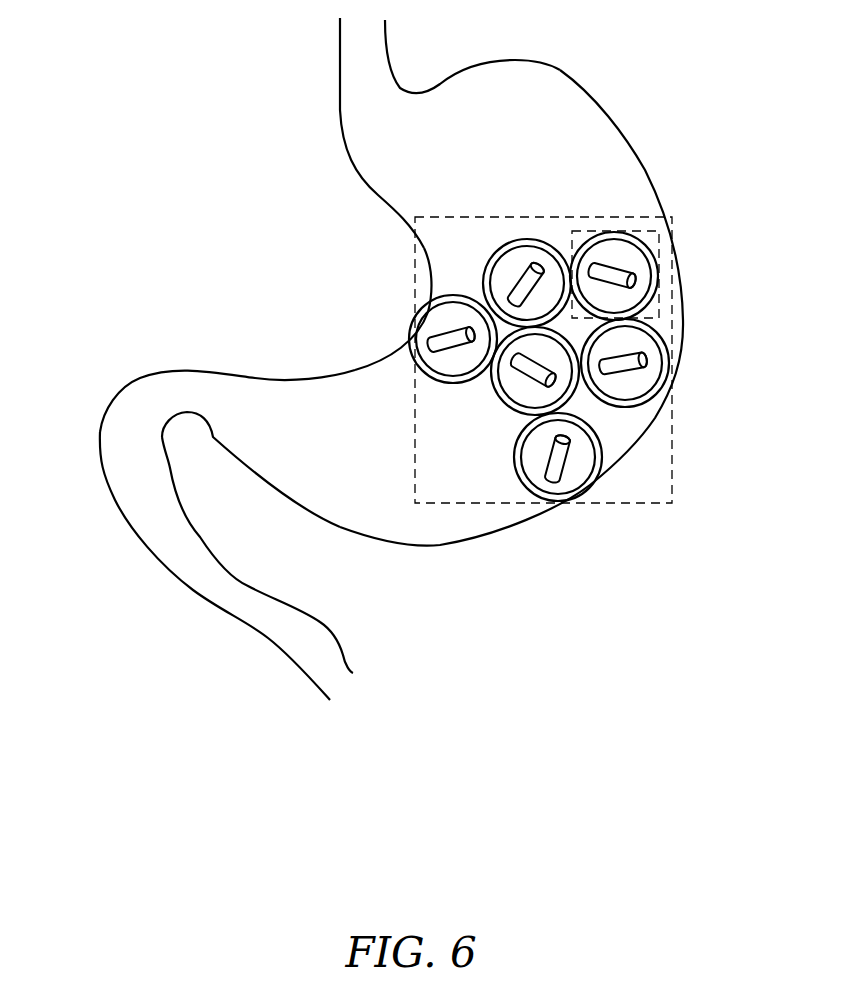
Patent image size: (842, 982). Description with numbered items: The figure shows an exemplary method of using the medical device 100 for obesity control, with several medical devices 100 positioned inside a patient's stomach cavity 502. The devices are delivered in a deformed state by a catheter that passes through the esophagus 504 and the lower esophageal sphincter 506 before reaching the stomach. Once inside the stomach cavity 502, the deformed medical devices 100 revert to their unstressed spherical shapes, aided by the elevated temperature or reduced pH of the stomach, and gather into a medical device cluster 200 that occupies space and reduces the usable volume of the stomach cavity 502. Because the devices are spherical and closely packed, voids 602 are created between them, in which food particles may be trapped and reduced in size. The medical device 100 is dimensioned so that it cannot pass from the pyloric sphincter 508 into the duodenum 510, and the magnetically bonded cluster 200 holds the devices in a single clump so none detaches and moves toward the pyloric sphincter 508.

The medical device 100 is at (631, 220).
The medical device cluster 200 is at (482, 514).
The stomach cavity 502 is at (644, 447).
The esophagus 504 is at (393, 52).
The lower esophageal sphincter 506 is at (334, 110).
The pyloric sphincter 508 is at (184, 380).
The duodenum 510 is at (117, 478).
The voids 602 is at (589, 319).